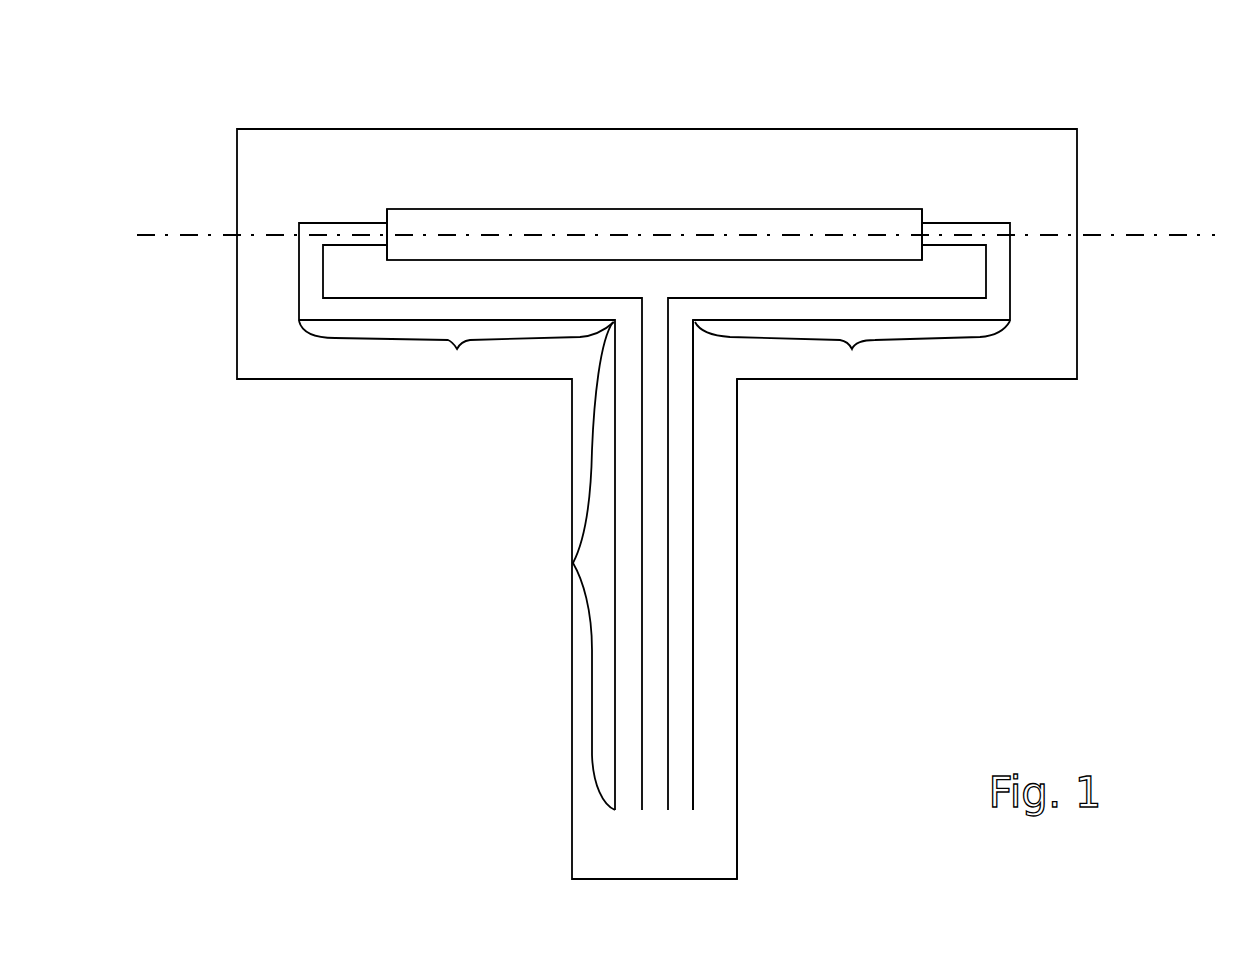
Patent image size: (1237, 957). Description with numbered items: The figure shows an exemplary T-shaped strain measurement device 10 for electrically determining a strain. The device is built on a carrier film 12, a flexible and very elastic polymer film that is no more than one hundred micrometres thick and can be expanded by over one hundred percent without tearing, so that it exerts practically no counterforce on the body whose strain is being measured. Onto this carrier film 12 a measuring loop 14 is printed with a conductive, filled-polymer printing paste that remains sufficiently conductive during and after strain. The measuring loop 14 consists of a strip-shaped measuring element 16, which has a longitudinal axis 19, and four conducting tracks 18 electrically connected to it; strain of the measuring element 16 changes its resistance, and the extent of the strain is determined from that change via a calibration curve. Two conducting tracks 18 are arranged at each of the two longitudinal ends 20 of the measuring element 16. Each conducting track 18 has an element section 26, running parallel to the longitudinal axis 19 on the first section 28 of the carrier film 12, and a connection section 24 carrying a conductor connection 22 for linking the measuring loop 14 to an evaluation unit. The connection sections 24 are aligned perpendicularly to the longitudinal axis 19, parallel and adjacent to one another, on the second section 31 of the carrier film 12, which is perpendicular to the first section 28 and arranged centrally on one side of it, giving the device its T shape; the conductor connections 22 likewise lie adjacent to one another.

The strain measurement device 10 is at (1028, 166).
The carrier film 12 is at (1050, 313).
The measuring loop 14 is at (705, 348).
The measuring element 16 is at (618, 209).
The conducting tracks 18 is at (700, 683).
The longitudinal axis 19 is at (148, 235).
The longitudinal ends 20 is at (397, 209).
The conductor connections 22 is at (702, 831).
The connection section 24 is at (573, 563).
The element section 26 is at (457, 349).
The first section 28 is at (461, 168).
The second section 31 is at (717, 543).